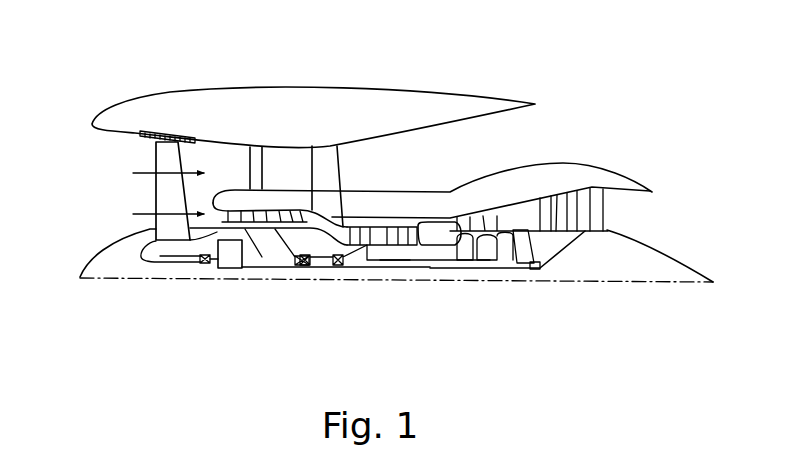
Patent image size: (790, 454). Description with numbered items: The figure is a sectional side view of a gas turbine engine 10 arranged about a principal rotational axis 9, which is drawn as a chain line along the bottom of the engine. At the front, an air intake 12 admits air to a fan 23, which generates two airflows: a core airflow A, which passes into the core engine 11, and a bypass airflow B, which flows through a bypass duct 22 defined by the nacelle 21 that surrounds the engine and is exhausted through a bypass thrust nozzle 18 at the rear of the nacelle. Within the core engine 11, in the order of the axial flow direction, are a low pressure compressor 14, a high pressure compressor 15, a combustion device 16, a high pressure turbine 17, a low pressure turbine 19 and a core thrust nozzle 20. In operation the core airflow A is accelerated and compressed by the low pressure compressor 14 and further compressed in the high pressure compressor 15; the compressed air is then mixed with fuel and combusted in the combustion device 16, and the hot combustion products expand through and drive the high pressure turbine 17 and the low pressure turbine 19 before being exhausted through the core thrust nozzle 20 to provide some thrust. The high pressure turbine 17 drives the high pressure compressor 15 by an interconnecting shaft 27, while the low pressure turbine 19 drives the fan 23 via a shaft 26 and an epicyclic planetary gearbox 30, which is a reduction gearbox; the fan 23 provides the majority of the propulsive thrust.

The principal rotational axis 9 is at (613, 283).
The gas turbine engine 10 is at (383, 184).
The core engine 11 is at (452, 207).
The air intake 12 is at (102, 153).
The low pressure compressor 14 is at (278, 216).
The high pressure compressor 15 is at (387, 226).
The combustion device 16 is at (438, 236).
The high pressure turbine 17 is at (492, 216).
The bypass thrust nozzle 18 is at (612, 102).
The low pressure turbine 19 is at (587, 232).
The core thrust nozzle 20 is at (653, 220).
The nacelle 21 is at (323, 98).
The bypass duct 22 is at (505, 136).
The fan 23 is at (155, 203).
The shaft 26 is at (357, 267).
The interconnecting shaft 27 is at (410, 267).
The epicyclic planetary gearbox 30 is at (231, 268).